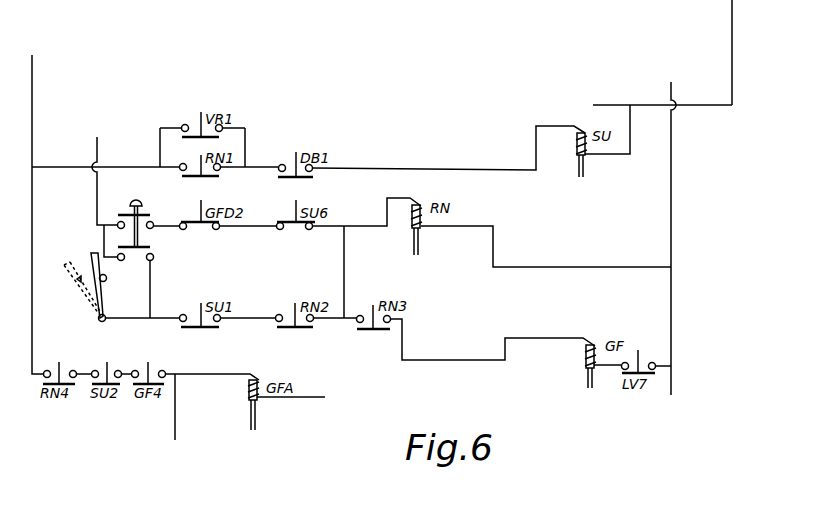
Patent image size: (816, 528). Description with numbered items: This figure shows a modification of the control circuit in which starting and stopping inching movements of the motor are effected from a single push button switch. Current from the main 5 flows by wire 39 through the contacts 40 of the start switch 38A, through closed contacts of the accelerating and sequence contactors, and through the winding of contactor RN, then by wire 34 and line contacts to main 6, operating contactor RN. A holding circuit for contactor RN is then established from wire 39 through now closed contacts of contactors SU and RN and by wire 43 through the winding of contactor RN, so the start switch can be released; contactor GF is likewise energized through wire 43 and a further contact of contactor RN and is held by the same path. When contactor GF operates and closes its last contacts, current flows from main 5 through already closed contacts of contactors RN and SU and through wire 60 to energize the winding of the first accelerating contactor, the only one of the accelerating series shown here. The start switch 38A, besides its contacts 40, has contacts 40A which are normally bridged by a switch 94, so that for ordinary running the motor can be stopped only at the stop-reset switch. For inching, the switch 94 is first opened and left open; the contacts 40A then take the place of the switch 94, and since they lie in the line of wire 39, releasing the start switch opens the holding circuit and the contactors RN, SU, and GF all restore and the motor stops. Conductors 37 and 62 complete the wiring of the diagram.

The main 5 is at (30, 243).
The main 6 is at (734, 60).
The wire 34 is at (674, 208).
The conductor 37 is at (614, 103).
The start switch 38A is at (139, 204).
The wire 39 is at (96, 189).
The contacts of start switch 40 is at (143, 232).
The contacts of start switch 40A is at (131, 258).
The wire 43 is at (343, 257).
The wire 60 is at (197, 374).
The conductor 62 is at (173, 428).
The switch 94 is at (101, 298).